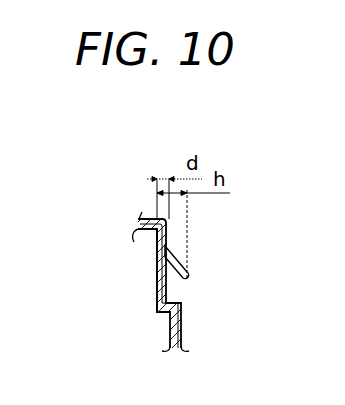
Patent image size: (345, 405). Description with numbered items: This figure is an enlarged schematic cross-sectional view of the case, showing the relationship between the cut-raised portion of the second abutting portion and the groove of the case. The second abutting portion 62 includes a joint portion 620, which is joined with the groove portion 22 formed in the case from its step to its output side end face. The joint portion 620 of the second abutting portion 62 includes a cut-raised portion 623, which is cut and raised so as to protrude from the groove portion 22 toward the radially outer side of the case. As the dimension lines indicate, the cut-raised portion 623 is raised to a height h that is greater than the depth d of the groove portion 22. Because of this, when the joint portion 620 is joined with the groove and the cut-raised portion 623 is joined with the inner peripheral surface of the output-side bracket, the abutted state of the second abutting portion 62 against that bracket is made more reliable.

The second abutting portion 62 is at (157, 300).
The joint portion 620 is at (157, 293).
The cut-raised portion 623 is at (186, 277).
The groove portion 22 is at (163, 280).